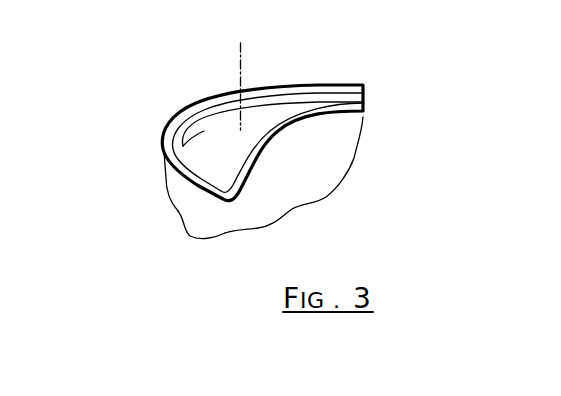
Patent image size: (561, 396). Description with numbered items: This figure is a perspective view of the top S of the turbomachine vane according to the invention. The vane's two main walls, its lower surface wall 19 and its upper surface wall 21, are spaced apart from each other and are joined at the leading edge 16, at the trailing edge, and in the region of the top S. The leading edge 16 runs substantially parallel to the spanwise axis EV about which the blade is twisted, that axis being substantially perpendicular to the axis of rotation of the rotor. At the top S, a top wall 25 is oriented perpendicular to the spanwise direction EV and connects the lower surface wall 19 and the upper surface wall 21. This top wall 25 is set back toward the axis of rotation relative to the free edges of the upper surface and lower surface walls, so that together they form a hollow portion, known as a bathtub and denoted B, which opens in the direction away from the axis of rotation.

The top S is at (127, 112).
The spanwise axis EV is at (240, 52).
The bathtub B is at (205, 116).
The top wall 25 is at (283, 117).
The lower surface wall 19 is at (294, 175).
The upper surface wall 21 is at (180, 181).
The leading edge 16 is at (226, 240).